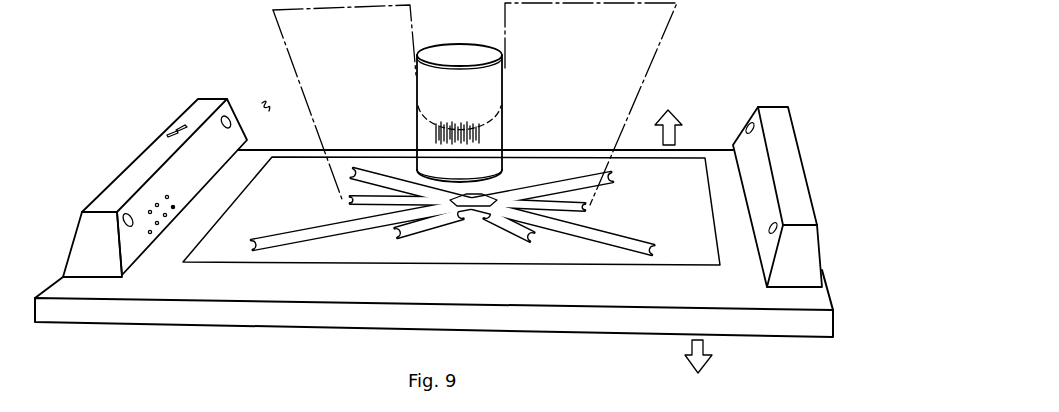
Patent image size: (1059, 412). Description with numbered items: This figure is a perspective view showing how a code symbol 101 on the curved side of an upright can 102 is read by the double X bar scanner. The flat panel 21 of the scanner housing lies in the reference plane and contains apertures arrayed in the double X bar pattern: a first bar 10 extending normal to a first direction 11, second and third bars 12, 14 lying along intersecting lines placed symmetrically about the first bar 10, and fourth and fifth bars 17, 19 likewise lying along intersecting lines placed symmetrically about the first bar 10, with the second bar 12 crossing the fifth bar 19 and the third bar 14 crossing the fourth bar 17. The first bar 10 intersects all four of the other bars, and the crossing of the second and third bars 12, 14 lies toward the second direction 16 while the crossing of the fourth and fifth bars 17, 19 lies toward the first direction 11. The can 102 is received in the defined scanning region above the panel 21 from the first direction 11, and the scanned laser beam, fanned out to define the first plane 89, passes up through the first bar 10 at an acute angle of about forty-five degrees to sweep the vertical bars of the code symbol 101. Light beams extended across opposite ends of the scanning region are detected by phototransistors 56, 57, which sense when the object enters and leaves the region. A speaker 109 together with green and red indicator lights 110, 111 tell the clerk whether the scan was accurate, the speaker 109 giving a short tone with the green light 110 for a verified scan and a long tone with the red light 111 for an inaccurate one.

The first bar 10 is at (590, 207).
The first direction 11 is at (675, 133).
The second bar 12 is at (523, 235).
The third bar 14 is at (412, 232).
The second direction 16 is at (705, 343).
The fourth bar 17 is at (618, 240).
The fifth bar 19 is at (302, 232).
The panel 21 is at (289, 163).
The phototransistor 56 is at (88, 208).
The phototransistor 57 is at (220, 116).
The first plane 89 is at (658, 52).
The code symbol 101 is at (450, 127).
The upright can 102 is at (505, 82).
The speaker 109 is at (157, 203).
The green indicator light 110 is at (163, 133).
The red indicator light 111 is at (173, 122).